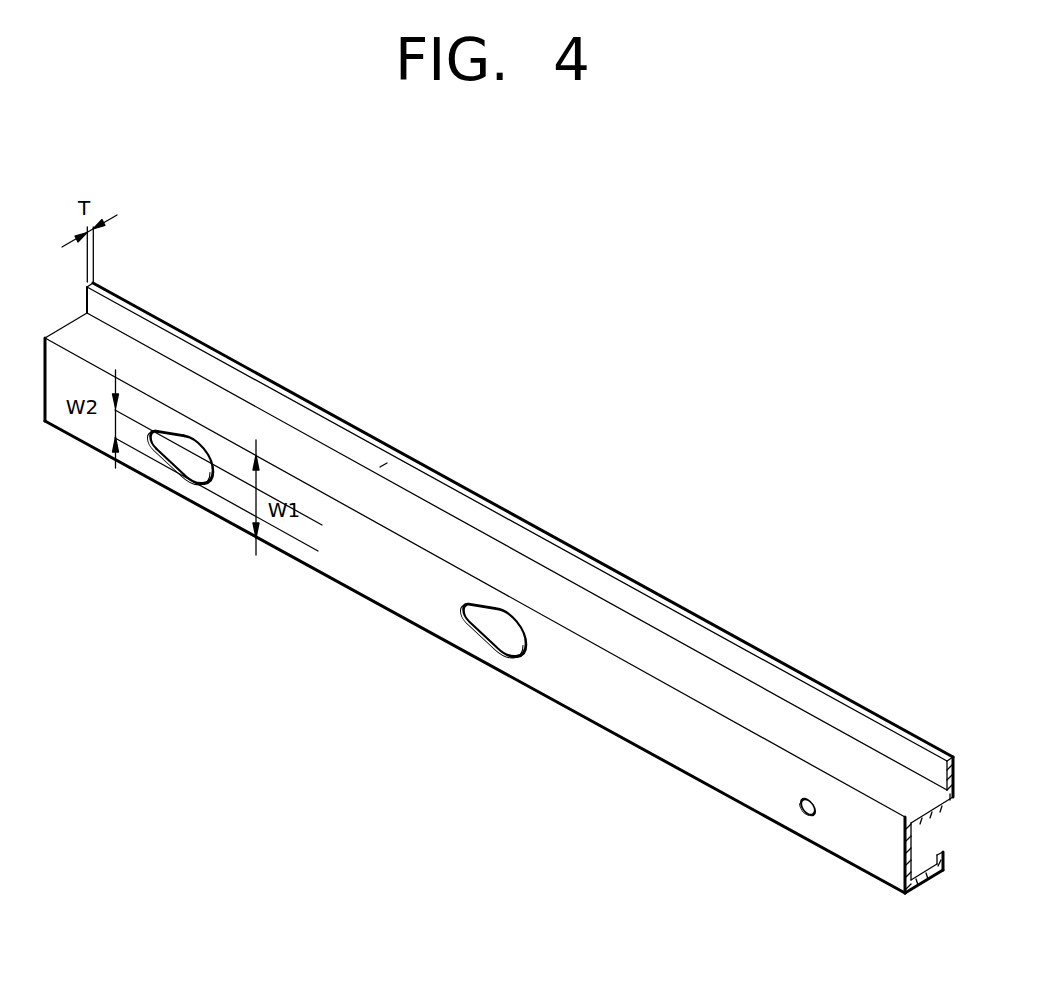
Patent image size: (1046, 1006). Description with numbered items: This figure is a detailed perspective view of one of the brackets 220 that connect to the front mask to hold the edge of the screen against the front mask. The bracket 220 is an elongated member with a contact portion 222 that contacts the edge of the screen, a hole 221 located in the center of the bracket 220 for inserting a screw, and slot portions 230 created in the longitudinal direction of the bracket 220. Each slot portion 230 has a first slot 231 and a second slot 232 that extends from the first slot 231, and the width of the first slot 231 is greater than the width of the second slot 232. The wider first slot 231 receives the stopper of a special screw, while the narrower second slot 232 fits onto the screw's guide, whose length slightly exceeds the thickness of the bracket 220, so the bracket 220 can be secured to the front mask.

The bracket 220 is at (590, 724).
The hole 221 is at (803, 814).
The contact portion 222 is at (401, 459).
The slot portion 230 is at (308, 497).
The first slot 231 is at (197, 478).
The second slot 232 is at (156, 450).